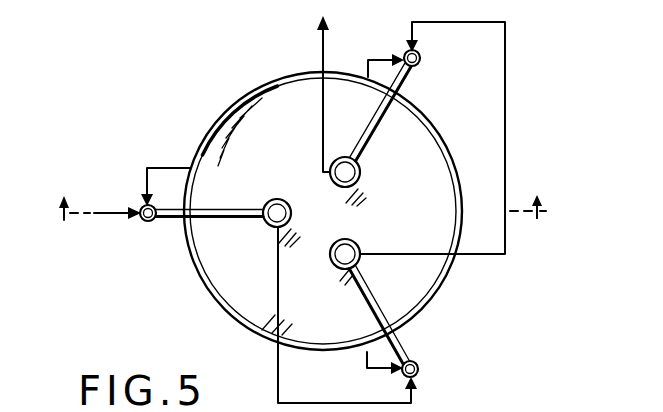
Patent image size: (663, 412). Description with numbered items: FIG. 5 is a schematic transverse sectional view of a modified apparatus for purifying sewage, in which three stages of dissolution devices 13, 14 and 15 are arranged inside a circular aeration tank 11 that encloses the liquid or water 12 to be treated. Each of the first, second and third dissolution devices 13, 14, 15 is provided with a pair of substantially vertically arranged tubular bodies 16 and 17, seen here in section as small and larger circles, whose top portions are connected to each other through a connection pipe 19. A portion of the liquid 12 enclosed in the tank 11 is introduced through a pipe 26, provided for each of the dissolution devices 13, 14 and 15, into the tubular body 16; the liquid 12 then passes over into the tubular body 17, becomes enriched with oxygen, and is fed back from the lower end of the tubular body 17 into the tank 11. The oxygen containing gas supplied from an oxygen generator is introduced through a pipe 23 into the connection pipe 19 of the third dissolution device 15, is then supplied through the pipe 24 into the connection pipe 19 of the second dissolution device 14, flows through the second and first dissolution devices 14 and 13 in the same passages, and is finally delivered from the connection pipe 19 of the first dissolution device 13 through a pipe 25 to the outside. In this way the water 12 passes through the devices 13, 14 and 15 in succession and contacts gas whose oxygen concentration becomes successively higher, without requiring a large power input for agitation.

The aeration tank 11 is at (427, 310).
The water to be treated 12 is at (433, 279).
The first dissolution device 13 is at (181, 224).
The second dissolution device 14 is at (372, 320).
The third dissolution device 15 is at (385, 131).
The tubular body 16 is at (146, 223).
The tubular body 17 is at (293, 202).
The connection pipe 19 is at (238, 208).
The pipe 23 is at (301, 197).
The pipe 24 is at (506, 143).
The pipe 25 is at (322, 58).
The pipe 26 is at (155, 169).